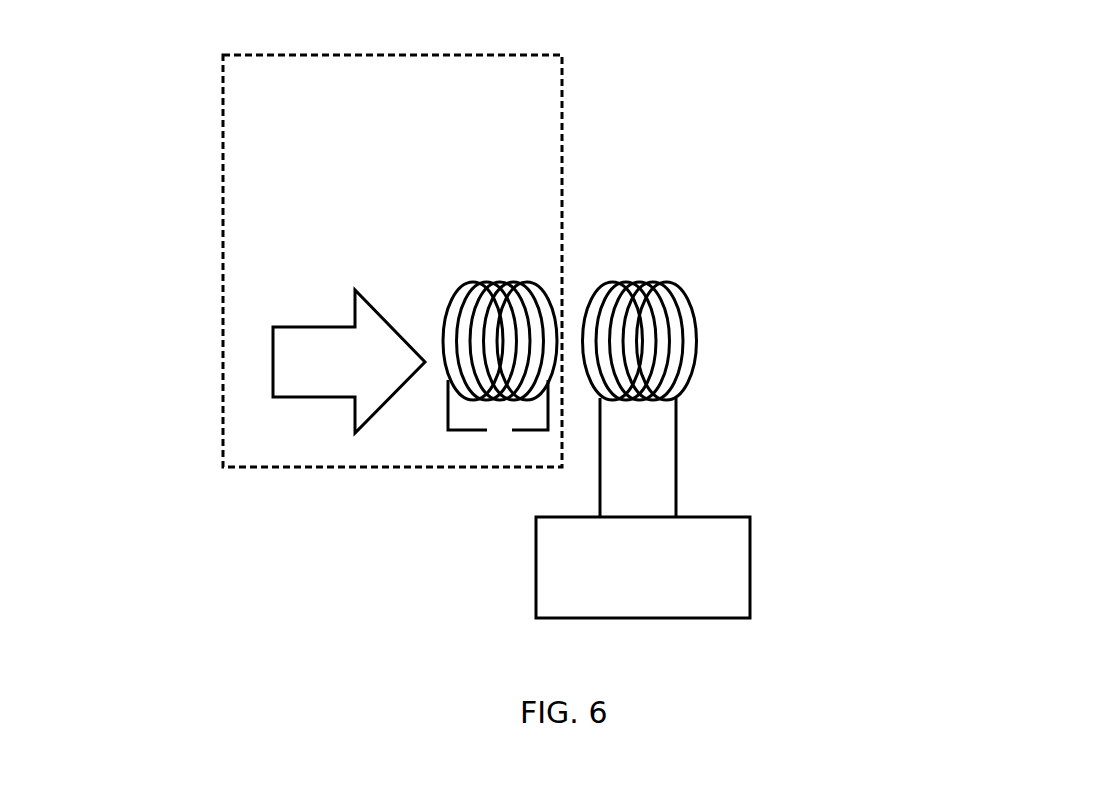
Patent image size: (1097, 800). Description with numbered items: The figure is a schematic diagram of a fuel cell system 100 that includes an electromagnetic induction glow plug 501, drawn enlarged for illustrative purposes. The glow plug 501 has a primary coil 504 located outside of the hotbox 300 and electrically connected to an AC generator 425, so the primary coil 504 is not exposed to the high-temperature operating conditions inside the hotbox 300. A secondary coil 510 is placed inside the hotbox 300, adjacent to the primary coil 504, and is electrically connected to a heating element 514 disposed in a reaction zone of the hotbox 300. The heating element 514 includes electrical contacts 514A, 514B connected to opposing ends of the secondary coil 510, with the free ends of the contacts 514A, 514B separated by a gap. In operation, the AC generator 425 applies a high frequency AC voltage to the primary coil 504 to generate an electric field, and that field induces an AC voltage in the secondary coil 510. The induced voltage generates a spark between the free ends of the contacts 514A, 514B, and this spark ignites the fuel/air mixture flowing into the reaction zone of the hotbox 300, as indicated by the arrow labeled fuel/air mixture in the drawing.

The fuel cell system 100 is at (130, 113).
The hotbox 300 is at (421, 235).
The electromagnetic induction glow plug 501 is at (722, 189).
The secondary coil 510 is at (538, 285).
The primary coil 504 is at (682, 297).
The heating element 514 is at (523, 582).
The electrical contact 514A is at (462, 432).
The electrical contact 514B is at (535, 432).
The AC generator 425 is at (752, 575).